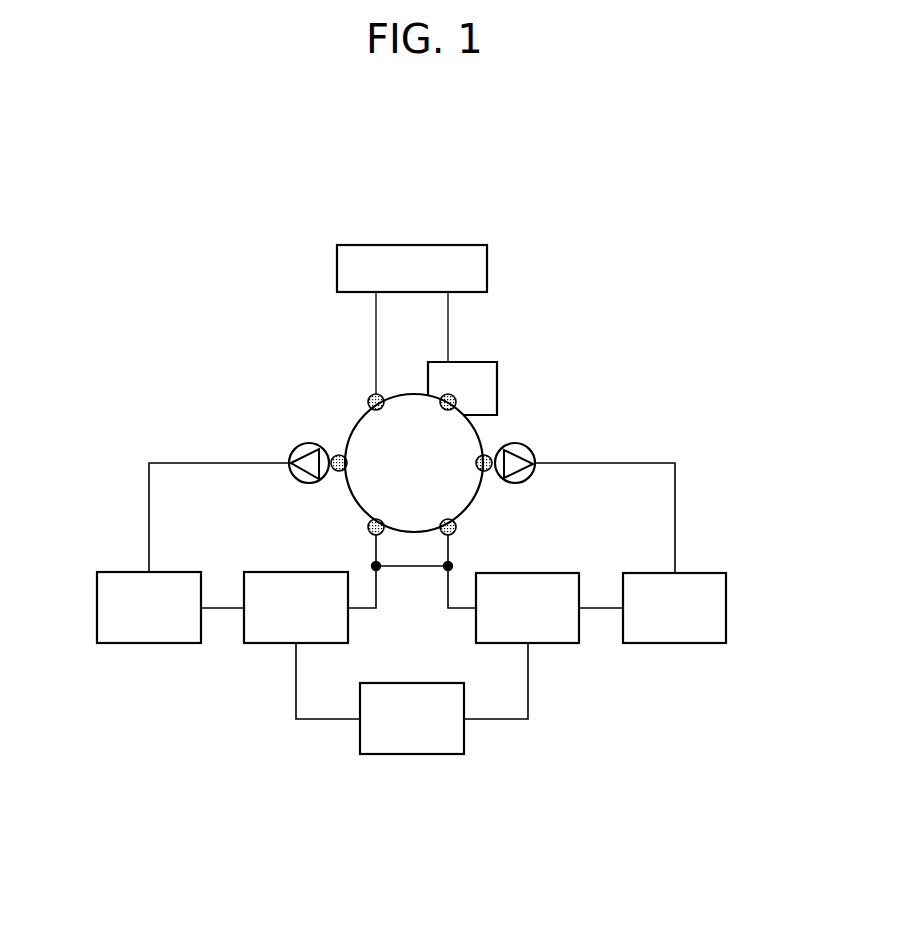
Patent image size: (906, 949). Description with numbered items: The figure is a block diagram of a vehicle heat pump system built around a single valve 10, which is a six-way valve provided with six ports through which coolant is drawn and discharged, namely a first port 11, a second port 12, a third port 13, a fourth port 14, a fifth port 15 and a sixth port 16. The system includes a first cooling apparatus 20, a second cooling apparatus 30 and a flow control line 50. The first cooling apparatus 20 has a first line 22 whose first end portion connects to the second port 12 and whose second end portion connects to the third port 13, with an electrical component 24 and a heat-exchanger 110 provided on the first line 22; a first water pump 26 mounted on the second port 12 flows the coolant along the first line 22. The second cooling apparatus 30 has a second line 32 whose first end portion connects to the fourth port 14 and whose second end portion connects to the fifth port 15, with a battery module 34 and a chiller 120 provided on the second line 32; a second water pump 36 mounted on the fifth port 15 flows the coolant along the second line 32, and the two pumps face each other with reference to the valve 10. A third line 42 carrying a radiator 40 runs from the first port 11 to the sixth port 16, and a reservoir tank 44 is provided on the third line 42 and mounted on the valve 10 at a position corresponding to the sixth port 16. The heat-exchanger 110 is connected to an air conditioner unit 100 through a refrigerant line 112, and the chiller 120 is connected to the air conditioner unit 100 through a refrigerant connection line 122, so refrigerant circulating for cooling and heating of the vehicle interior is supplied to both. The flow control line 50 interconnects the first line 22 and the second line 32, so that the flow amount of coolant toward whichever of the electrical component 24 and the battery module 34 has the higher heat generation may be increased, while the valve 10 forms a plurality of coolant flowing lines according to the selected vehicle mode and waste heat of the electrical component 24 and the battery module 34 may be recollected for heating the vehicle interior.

The valve 10 is at (347, 414).
The first port 11 is at (370, 396).
The second port 12 is at (335, 455).
The third port 13 is at (368, 527).
The fourth port 14 is at (456, 527).
The fifth port 15 is at (490, 455).
The sixth port 16 is at (456, 403).
The first cooling apparatus 20 is at (122, 522).
The first line 22 is at (149, 480).
The electrical component 24 is at (141, 643).
The first water pump 26 is at (295, 479).
The second cooling apparatus 30 is at (687, 481).
The second line 32 is at (675, 525).
The battery module 34 is at (726, 605).
The second water pump 36 is at (525, 482).
The radiator 40 is at (487, 268).
The third line 42 is at (376, 325).
The reservoir tank 44 is at (497, 380).
The flow control line 50 is at (413, 568).
The air conditioner unit 100 is at (412, 754).
The heat-exchanger 110 is at (268, 643).
The refrigerant line 112 is at (322, 719).
The chiller 120 is at (558, 643).
The refrigerant connection line 122 is at (497, 719).